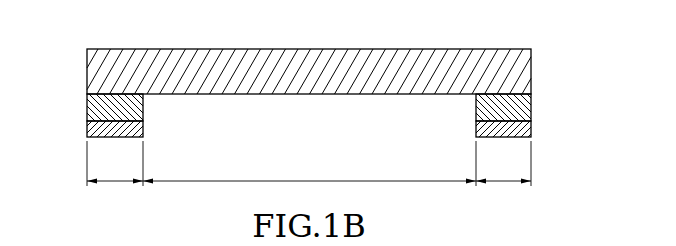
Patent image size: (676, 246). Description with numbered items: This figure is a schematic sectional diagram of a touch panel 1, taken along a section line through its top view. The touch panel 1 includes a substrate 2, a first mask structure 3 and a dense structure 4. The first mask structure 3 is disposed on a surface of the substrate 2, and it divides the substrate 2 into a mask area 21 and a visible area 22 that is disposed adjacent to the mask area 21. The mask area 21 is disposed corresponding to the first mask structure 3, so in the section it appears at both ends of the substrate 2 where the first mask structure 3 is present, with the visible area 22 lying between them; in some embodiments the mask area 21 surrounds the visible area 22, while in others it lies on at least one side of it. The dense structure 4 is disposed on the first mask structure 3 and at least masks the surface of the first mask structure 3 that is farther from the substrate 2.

The touch panel 1 is at (106, 31).
The substrate 2 is at (528, 65).
The first mask structure 3 is at (528, 106).
The dense structure 4 is at (528, 130).
The mask area 21 is at (309, 172).
The visible area 22 is at (309, 172).